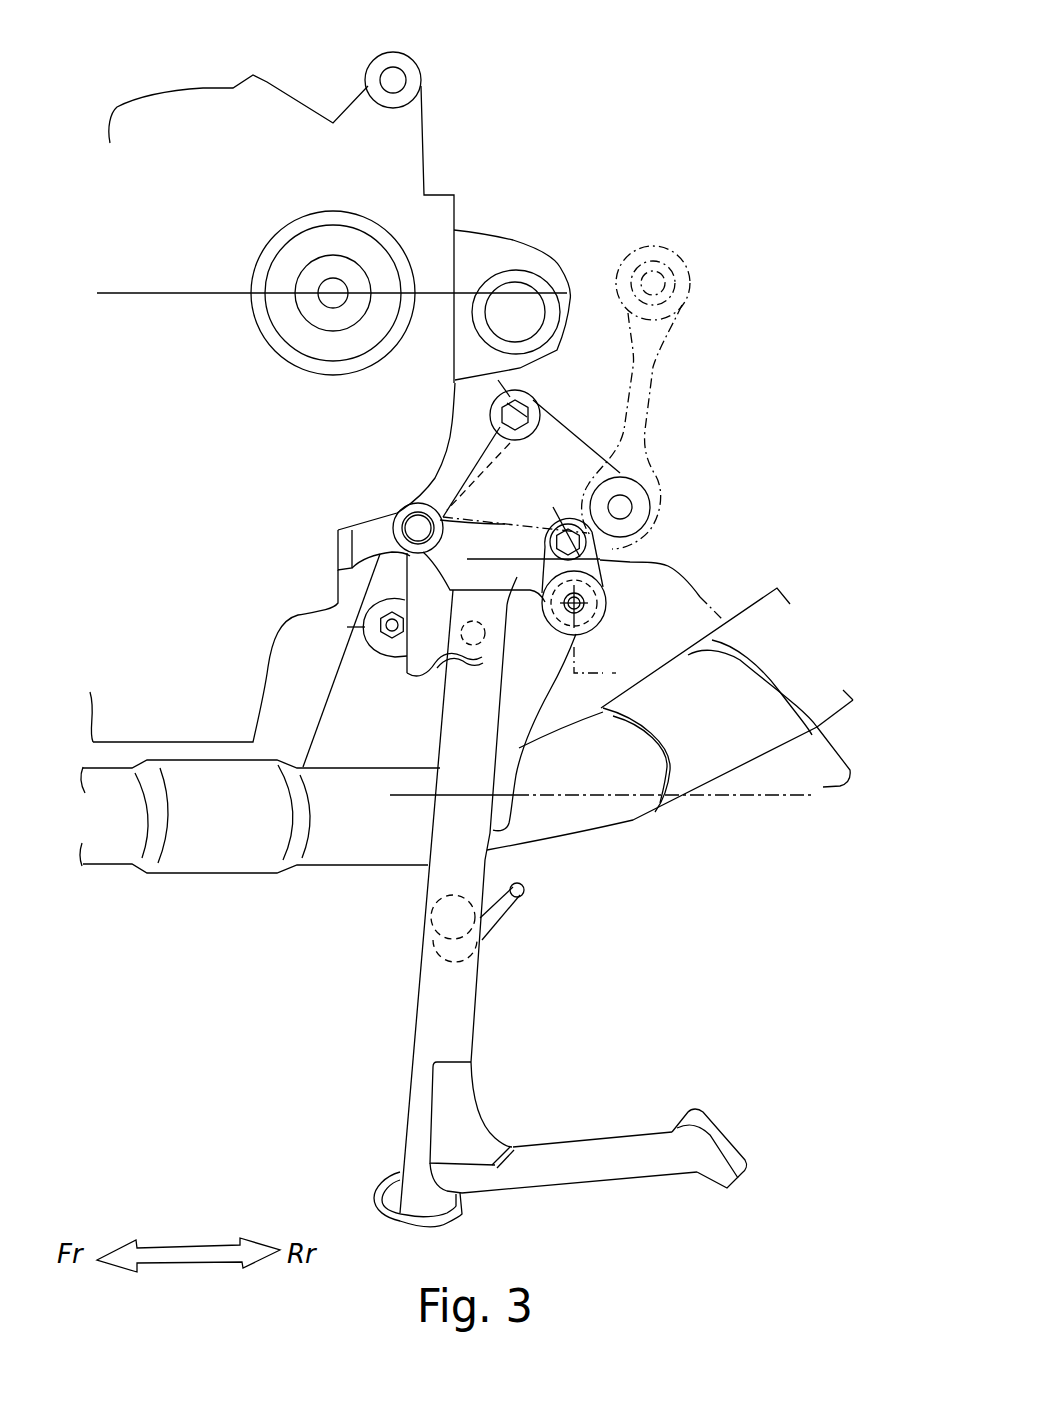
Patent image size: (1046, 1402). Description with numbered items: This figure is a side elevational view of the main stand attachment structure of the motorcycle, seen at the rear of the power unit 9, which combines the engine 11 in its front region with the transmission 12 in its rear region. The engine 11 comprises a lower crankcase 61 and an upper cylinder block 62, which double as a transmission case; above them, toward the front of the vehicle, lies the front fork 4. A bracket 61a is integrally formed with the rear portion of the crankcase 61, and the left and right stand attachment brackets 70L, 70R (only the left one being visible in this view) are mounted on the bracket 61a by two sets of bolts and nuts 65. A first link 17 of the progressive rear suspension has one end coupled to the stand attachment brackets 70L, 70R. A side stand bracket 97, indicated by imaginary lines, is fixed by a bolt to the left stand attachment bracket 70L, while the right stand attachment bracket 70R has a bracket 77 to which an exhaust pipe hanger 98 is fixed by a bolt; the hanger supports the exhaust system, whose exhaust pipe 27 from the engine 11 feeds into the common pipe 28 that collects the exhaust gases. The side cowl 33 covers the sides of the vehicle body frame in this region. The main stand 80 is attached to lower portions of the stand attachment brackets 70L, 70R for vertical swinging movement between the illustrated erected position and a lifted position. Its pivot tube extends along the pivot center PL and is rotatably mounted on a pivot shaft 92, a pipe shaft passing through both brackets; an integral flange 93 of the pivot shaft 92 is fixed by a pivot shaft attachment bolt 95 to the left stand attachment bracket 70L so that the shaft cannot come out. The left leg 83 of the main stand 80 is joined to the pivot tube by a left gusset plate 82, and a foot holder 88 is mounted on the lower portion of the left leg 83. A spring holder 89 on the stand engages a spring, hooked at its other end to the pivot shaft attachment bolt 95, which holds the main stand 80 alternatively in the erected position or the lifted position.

The front fork 4 is at (883, 707).
The power unit 9 is at (185, 858).
The engine 11 is at (185, 858).
The transmission 12 is at (187, 700).
The first link 17 is at (673, 252).
The exhaust pipe 27 is at (260, 888).
The common pipe 28 is at (337, 844).
The side cowl 33 is at (817, 790).
The crankcase 61 is at (142, 673).
The bracket 61a is at (463, 442).
The cylinder block 62 is at (210, 113).
The bolts and nuts 65 is at (540, 400).
The left stand attachment bracket 70L is at (593, 430).
The right stand attachment bracket 70R is at (652, 498).
The bracket 77 is at (383, 594).
The main stand 80 is at (473, 1023).
The left gusset plate 82 is at (516, 700).
The left leg 83 is at (463, 973).
The foot holder 88 is at (622, 1147).
The spring holder 89 is at (520, 893).
The pivot shaft 92 is at (598, 617).
The flange 93 is at (607, 558).
The pivot shaft attachment bolt 95 is at (590, 532).
The side stand bracket 97 is at (407, 650).
The exhaust pipe hanger 98 is at (414, 741).
The pivot center PL is at (582, 592).